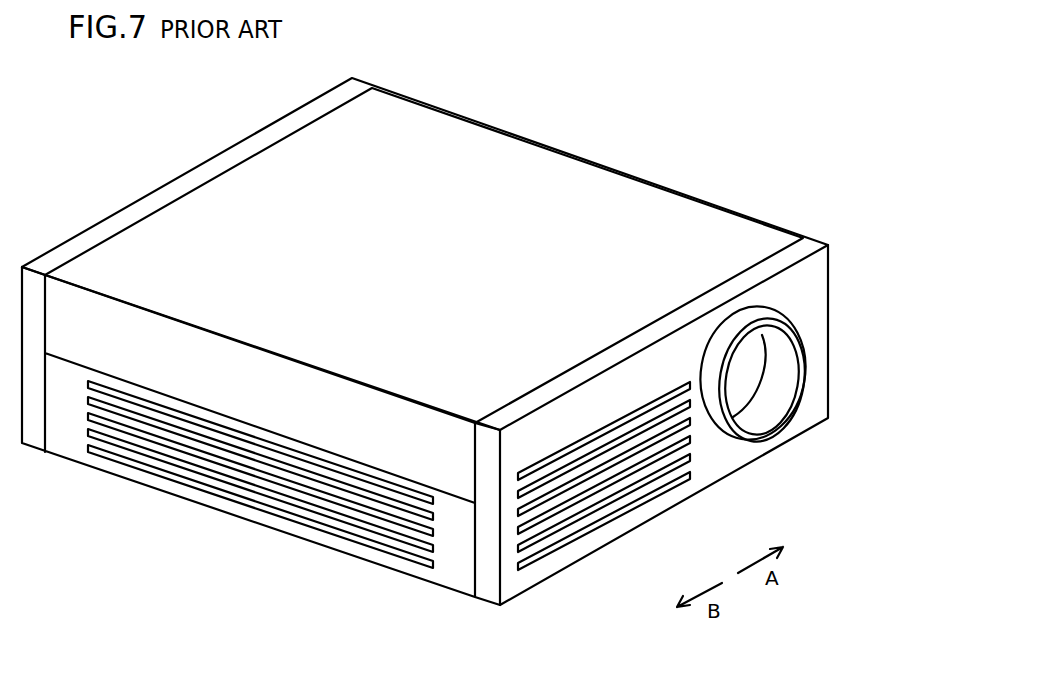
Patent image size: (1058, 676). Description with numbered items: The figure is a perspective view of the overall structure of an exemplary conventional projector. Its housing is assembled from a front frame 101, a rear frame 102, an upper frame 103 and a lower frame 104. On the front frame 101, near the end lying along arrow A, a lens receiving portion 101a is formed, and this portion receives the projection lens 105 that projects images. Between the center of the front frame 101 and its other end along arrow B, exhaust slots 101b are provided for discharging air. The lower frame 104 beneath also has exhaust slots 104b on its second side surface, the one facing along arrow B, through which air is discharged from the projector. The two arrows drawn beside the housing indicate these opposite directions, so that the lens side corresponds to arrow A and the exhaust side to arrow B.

The projector main body 101 is at (708, 453).
The lens bezel / projection opening 101a is at (750, 308).
The side ventilation louvers 101b is at (613, 517).
The top frame rim 102 is at (237, 158).
The top cover 103 is at (573, 185).
The lower casing 104 is at (452, 560).
The front ventilation louvers 104b is at (272, 512).
The projection lens 105 is at (742, 377).